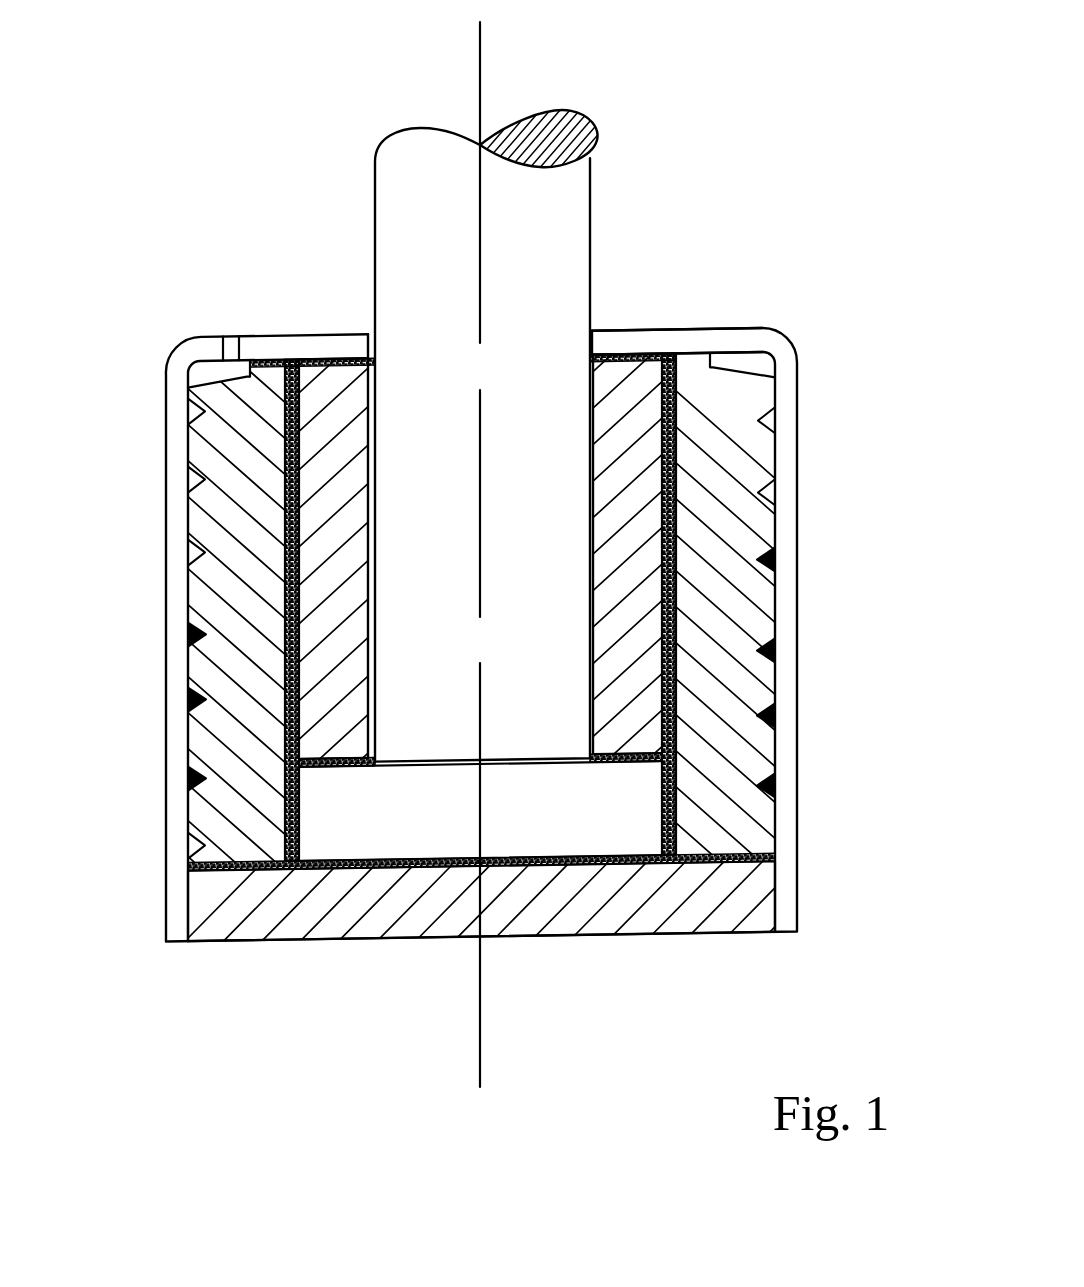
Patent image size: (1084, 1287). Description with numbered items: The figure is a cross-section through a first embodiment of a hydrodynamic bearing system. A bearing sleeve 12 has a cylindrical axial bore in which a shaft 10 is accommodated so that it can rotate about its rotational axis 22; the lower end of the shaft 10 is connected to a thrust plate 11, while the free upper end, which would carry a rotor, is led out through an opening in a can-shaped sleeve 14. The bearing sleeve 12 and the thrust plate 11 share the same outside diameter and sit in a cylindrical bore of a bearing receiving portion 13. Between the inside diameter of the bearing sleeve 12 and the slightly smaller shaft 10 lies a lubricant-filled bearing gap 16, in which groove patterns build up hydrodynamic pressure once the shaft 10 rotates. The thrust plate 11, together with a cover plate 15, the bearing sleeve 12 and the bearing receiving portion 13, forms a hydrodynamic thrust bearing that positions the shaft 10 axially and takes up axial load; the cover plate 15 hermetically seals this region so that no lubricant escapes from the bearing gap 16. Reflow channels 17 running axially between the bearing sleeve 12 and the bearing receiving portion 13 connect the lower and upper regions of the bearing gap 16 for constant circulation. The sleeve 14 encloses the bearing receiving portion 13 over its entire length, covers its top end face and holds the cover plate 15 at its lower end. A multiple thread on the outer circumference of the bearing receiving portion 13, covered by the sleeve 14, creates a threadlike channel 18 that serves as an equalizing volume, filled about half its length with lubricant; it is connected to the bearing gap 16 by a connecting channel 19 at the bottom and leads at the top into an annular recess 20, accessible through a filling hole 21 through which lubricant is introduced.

The shaft 10 is at (573, 255).
The thrust plate 11 is at (602, 833).
The bearing sleeve 12 is at (640, 383).
The bearing receiving portion 13 is at (737, 408).
The can-shaped sleeve 14 is at (784, 557).
The cover plate 15 is at (720, 913).
The bearing gap 16 is at (588, 653).
The reflow channels 17 is at (677, 483).
The threadlike channel 18 is at (770, 723).
The connecting channel 19 is at (730, 856).
The annular recess 20 is at (752, 360).
The filling hole 21 is at (232, 340).
The rotational axis 22 is at (483, 40).